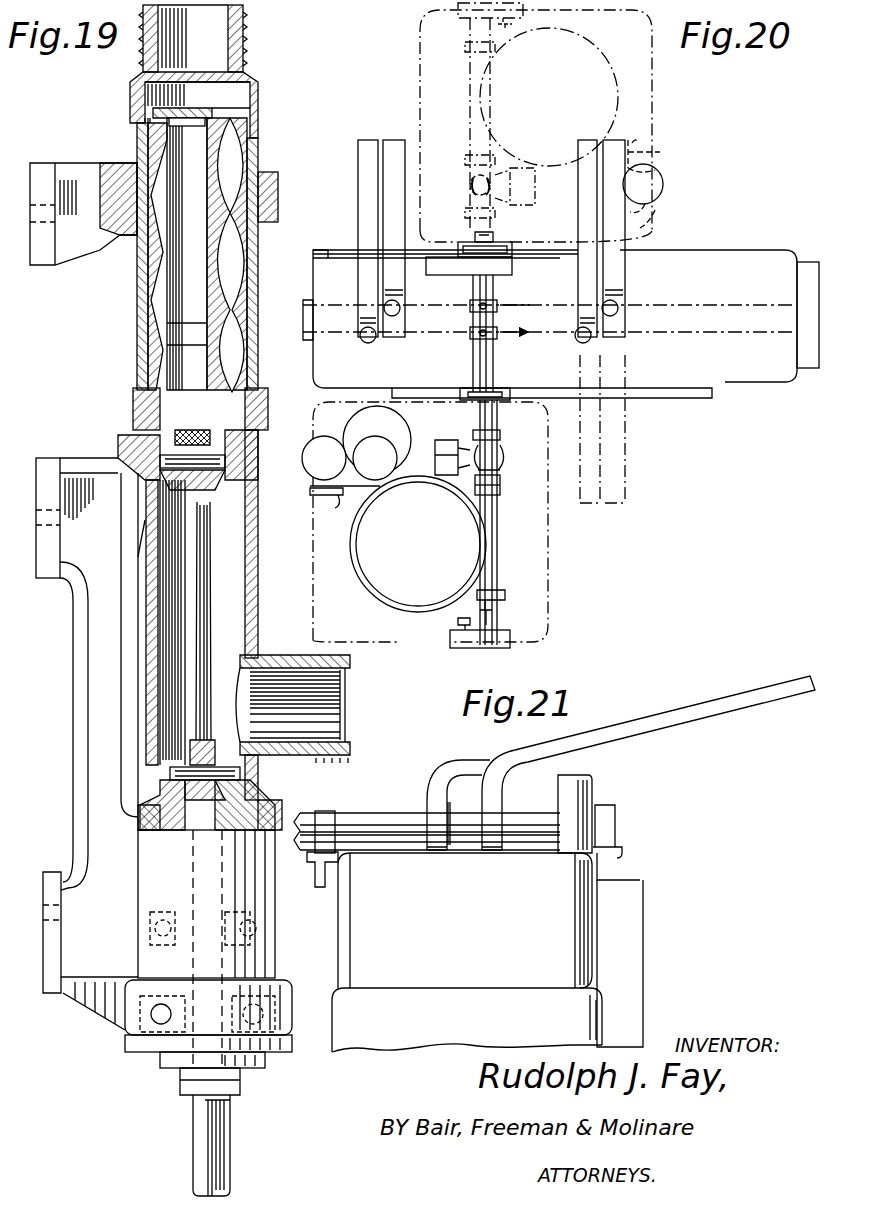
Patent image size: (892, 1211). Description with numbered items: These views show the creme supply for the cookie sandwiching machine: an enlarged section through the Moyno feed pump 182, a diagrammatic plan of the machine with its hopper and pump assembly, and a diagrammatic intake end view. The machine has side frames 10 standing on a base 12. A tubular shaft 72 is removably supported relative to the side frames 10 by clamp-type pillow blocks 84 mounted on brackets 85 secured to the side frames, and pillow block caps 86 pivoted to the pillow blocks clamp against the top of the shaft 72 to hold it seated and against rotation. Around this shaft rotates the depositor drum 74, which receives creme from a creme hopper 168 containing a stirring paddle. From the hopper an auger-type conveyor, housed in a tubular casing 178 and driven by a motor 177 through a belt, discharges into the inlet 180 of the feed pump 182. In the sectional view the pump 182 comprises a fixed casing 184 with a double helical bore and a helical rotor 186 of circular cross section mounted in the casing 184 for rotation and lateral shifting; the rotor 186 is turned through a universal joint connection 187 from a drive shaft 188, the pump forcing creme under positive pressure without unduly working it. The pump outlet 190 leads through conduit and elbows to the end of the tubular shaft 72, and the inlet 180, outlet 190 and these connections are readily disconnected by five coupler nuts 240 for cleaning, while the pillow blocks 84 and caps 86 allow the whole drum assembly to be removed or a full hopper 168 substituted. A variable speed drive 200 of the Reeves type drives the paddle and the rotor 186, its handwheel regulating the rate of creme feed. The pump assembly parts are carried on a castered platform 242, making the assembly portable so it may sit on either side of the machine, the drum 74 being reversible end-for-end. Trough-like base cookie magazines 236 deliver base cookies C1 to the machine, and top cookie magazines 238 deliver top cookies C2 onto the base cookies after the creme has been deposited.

In FIG. 20, the side frames 10 is at (752, 252).
In FIG. 21, the side frames 10 is at (595, 897).
In FIG. 20, the base 12 is at (657, 392).
In FIG. 21, the base 12 is at (390, 1047).
In FIG. 20, the tubular shaft 72 is at (480, 402).
In FIG. 20, the depositor drum 74 is at (497, 362).
In FIG. 21, the depositor drum 74 is at (405, 812).
In FIG. 21, the pillow blocks 84 is at (322, 858).
In FIG. 20, the brackets 85 is at (500, 242).
In FIG. 21, the brackets 85 is at (618, 855).
In FIG. 20, the pillow block caps 86 is at (500, 392).
In FIG. 20, the creme hopper 168 is at (588, 33).
In FIG. 20, the motor 177 is at (520, 22).
In FIG. 20, the tubular casing 178 is at (476, 62).
In FIG. 19, the inlet 180 is at (275, 680).
In FIG. 19, the feed pump 182 is at (155, 349).
In FIG. 20, the feed pump 182 is at (467, 186).
In FIG. 19, the fixed casing 184 is at (160, 262).
In FIG. 19, the helical rotor 186 is at (158, 296).
In FIG. 19, the universal joint connection 187 is at (200, 590).
In FIG. 19, the drive shaft 188 is at (250, 786).
In FIG. 19, the outlet 190 is at (213, 55).
In FIG. 20, the variable speed drive 200 is at (665, 183).
In FIG. 20, the base cookie magazines 236 is at (393, 213).
In FIG. 20, the top cookie magazines 238 is at (588, 275).
In FIG. 21, the top cookie magazines 238 is at (500, 760).
In FIG. 20, the coupler nuts 240 is at (500, 480).
In FIG. 20, the platform 242 is at (652, 78).
In FIG. 20, the base cookies C1 is at (370, 343).
In FIG. 20, the top cookies C2 is at (591, 338).